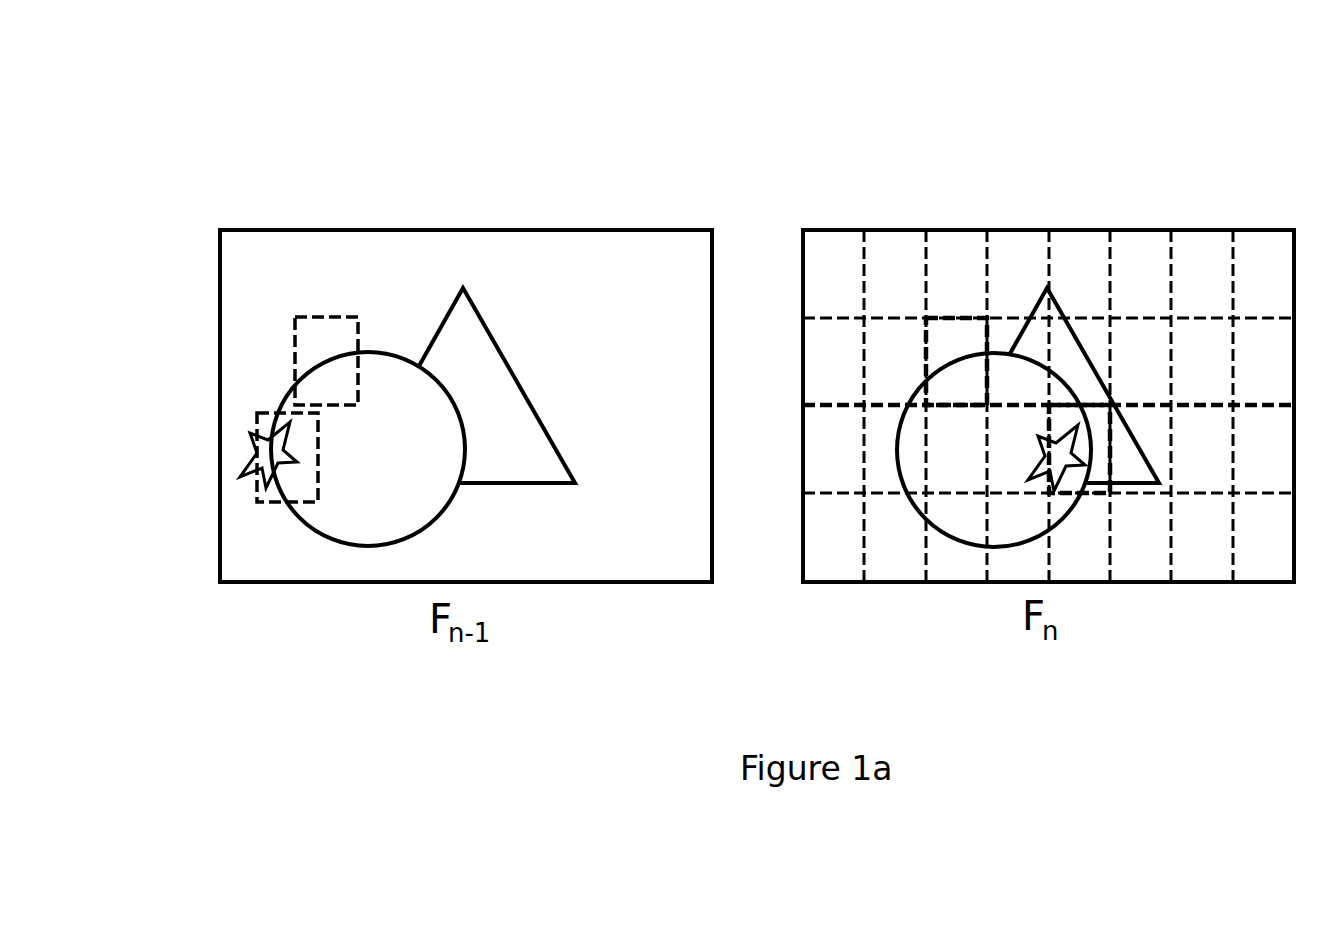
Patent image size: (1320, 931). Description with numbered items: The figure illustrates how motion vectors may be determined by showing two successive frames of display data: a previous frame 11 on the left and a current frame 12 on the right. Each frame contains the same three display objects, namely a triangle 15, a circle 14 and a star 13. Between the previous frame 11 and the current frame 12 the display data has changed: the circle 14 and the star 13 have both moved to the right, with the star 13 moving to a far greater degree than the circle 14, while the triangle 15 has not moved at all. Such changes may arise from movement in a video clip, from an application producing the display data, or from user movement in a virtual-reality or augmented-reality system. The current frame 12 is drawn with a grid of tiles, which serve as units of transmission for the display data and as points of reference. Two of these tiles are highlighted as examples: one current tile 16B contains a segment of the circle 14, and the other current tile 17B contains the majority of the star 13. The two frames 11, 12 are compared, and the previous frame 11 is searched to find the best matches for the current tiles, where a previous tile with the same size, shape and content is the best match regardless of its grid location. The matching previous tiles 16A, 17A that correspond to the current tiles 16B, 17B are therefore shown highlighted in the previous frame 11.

The previous frame F_{n-1} 11 is at (467, 230).
The current frame F_n 12 is at (1048, 230).
The star 13 is at (270, 485).
The circle 14 is at (367, 548).
The triangle 15 is at (522, 382).
The previous tile 16A is at (326, 317).
The current tile 16B is at (958, 317).
The previous tile 17A is at (287, 503).
The current tile 17B is at (1082, 498).